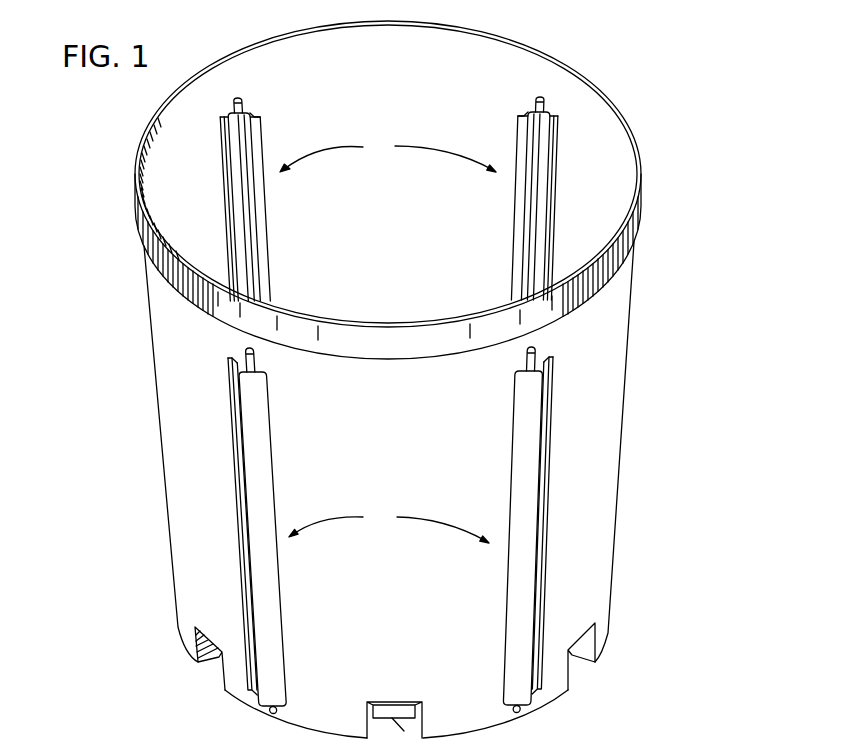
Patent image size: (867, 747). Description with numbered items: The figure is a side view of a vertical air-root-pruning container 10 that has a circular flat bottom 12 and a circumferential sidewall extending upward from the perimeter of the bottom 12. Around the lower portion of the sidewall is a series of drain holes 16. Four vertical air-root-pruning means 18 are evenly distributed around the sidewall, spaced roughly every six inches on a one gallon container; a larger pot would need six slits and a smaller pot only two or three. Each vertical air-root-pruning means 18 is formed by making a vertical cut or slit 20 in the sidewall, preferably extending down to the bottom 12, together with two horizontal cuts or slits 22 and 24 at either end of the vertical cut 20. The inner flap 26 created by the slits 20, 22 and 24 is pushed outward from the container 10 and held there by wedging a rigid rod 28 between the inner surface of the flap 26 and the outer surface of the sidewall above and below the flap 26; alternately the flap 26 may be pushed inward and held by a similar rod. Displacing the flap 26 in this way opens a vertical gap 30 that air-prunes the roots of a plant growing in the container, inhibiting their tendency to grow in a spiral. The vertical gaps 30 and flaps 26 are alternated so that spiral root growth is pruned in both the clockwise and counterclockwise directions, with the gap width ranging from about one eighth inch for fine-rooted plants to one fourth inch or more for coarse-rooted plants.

The air-root-pruning container 10 is at (633, 88).
The bottom 12 is at (404, 731).
The drain holes 16 is at (195, 640).
The vertical air-root-pruning means 18 is at (388, 339).
The vertical cut or slit 20 is at (224, 170).
The horizontal cut or slit 22 is at (230, 113).
The horizontal cut or slit 24 is at (252, 690).
The inner flap 26 is at (258, 223).
The rigid rod 28 is at (245, 127).
The vertical gap 30 is at (226, 227).